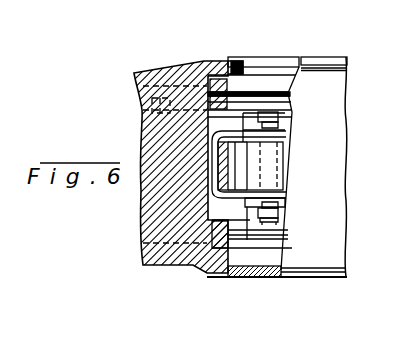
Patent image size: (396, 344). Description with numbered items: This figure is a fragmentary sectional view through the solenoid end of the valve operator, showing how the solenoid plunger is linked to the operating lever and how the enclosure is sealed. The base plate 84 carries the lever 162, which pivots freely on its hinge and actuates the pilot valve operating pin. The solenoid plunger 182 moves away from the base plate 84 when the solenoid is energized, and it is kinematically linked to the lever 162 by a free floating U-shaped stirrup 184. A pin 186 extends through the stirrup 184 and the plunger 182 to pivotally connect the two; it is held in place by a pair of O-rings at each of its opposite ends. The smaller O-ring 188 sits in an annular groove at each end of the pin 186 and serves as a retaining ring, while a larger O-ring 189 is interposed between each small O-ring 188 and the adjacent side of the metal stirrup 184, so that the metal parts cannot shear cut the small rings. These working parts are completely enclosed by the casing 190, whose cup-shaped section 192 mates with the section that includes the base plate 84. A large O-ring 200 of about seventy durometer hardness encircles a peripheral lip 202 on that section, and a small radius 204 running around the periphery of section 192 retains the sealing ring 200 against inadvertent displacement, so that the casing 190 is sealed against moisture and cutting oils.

The base plate 84 is at (173, 80).
The O-ring 200 is at (237, 58).
The small radius 204 is at (243, 60).
The casing 190 is at (317, 57).
The casing section 192 is at (337, 64).
The peripheral lip 202 is at (240, 77).
The lever 162 is at (205, 169).
The U-shaped stirrup 184 is at (292, 121).
The plunger 182 is at (288, 151).
The O-ring 188 is at (296, 110).
The O-ring 189 is at (290, 121).
The pin 186 is at (283, 211).